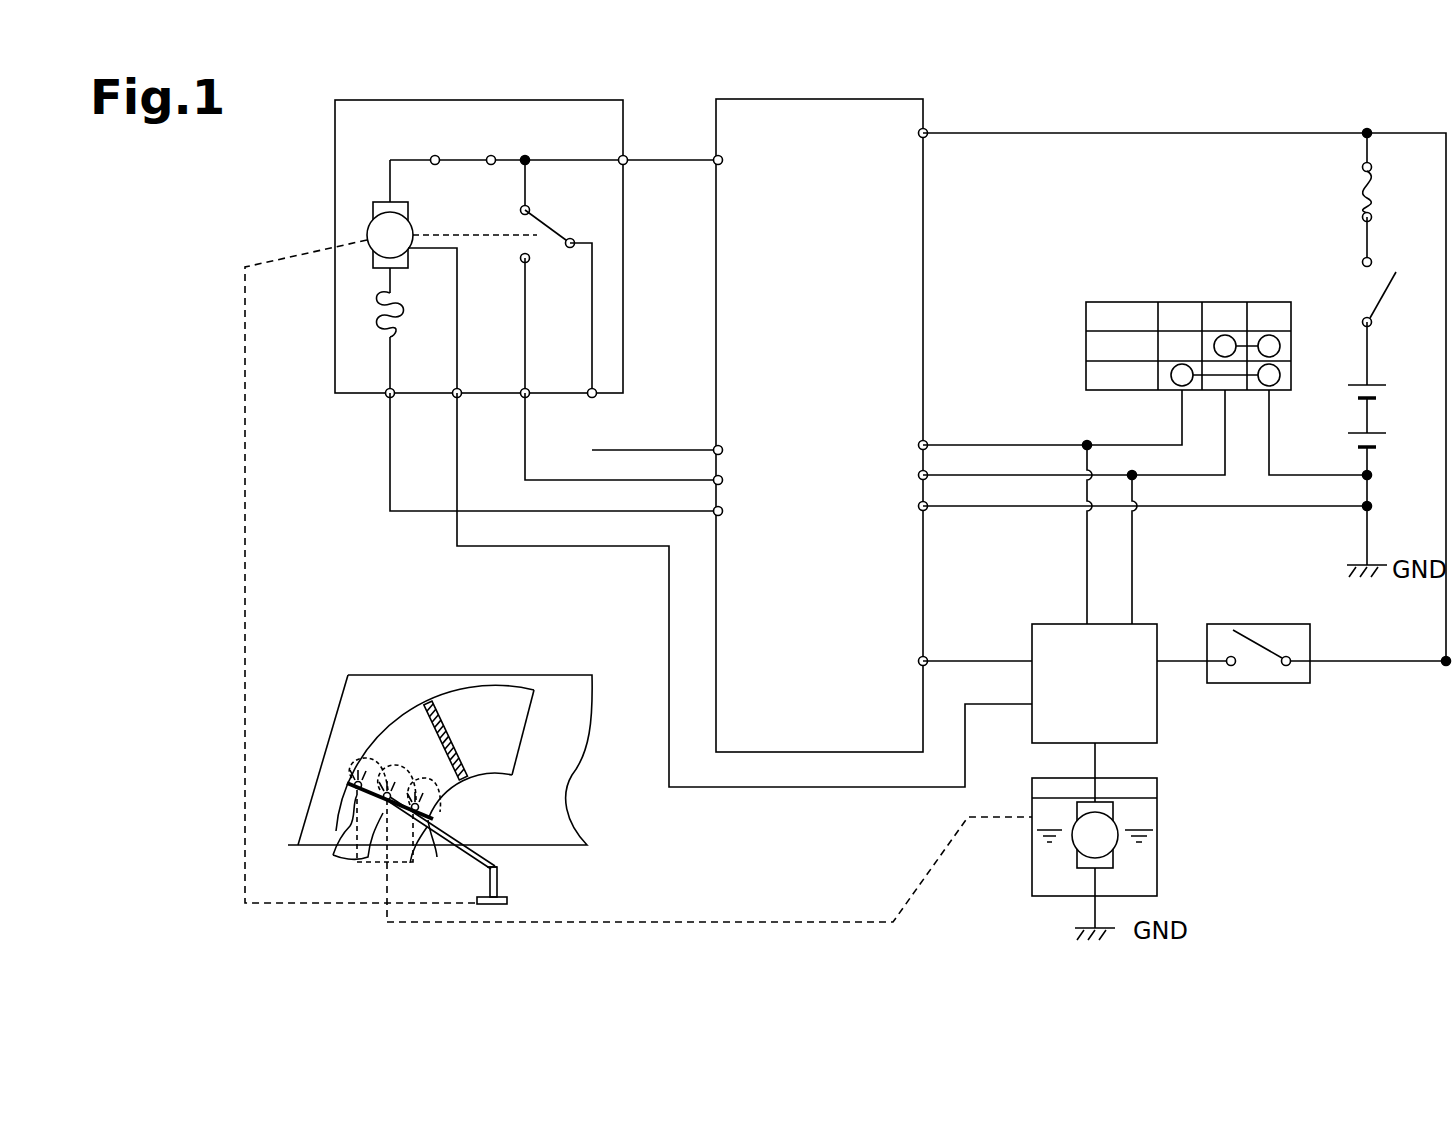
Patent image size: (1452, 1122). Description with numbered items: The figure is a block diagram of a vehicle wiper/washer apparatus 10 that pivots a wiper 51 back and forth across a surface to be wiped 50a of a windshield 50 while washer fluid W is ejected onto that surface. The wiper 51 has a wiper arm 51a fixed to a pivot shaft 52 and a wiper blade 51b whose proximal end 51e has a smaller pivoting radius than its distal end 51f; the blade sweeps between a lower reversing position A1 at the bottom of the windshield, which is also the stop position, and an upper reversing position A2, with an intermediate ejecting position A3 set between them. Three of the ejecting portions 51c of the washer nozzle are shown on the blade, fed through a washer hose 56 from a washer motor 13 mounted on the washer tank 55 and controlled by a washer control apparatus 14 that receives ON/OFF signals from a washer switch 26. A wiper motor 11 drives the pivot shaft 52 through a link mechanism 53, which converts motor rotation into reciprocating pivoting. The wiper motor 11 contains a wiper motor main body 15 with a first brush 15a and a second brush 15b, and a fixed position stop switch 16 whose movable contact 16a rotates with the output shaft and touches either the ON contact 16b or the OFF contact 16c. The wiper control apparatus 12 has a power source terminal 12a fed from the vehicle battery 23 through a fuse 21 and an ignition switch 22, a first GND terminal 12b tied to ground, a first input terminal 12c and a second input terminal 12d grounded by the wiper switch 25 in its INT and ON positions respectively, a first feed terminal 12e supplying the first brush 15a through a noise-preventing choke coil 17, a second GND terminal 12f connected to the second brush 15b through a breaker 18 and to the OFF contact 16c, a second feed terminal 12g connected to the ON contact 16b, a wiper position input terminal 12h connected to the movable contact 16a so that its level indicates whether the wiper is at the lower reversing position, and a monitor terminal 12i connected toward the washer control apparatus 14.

The vehicle wiper/washer apparatus 10 is at (247, 205).
The wiper motor 11 is at (606, 100).
The wiper control apparatus 12 is at (900, 100).
The power source terminal 12a is at (926, 130).
The first GND terminal 12b is at (928, 503).
The first input terminal 12c is at (928, 472).
The second input terminal 12d is at (928, 442).
The first feed terminal 12e is at (710, 510).
The second GND terminal 12f is at (712, 158).
The second feed terminal 12g is at (710, 478).
The wiper position input terminal 12h is at (710, 448).
The monitor terminal 12i is at (928, 658).
The washer motor 13 is at (1113, 822).
The washer control apparatus 14 is at (1050, 624).
The wiper motor main body 15 is at (372, 222).
The first brush 15a is at (400, 270).
The second brush 15b is at (382, 198).
The fixed position stop switch 16 is at (506, 276).
The movable contact 16a is at (578, 210).
The ON contact 16b is at (522, 260).
The OFF contact 16c is at (520, 212).
The choke coil 17 is at (378, 330).
The breaker 18 is at (460, 156).
The fuse 21 is at (1372, 186).
The ignition switch 22 is at (1382, 302).
The vehicle battery 23 is at (1370, 384).
The wiper switch 25 is at (1280, 300).
The washer switch 26 is at (1300, 622).
The windshield 50 is at (365, 676).
The surface to be wiped 50a is at (420, 680).
The wiper 51 is at (412, 824).
The wiper arm 51a is at (478, 858).
The wiper blade 51b is at (418, 810).
The ejecting portions 51c is at (373, 824).
The proximal end of wiper blade 51e is at (433, 843).
The distal end of wiper blade 51f is at (354, 786).
The pivot shaft 52 is at (500, 882).
The link mechanism 53 is at (250, 550).
The washer tank 55 is at (1157, 880).
The washer hose 56 is at (712, 920).
The lower reversing position A1 is at (271, 844).
The upper reversing position A2 is at (536, 688).
The intermediate ejecting position A3 is at (450, 706).
The washer fluid W is at (1032, 882).